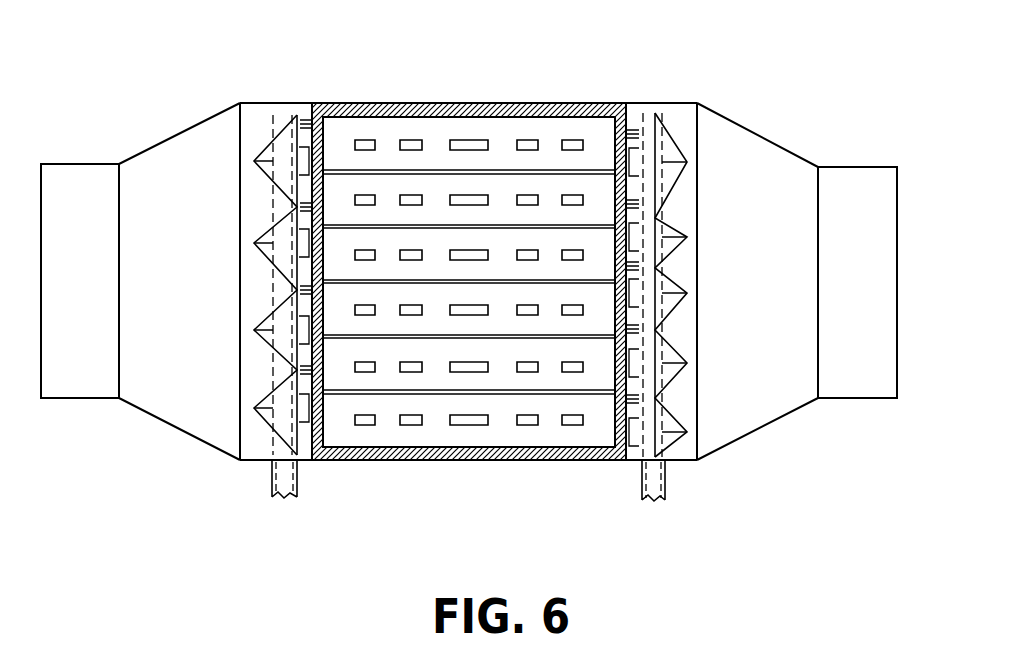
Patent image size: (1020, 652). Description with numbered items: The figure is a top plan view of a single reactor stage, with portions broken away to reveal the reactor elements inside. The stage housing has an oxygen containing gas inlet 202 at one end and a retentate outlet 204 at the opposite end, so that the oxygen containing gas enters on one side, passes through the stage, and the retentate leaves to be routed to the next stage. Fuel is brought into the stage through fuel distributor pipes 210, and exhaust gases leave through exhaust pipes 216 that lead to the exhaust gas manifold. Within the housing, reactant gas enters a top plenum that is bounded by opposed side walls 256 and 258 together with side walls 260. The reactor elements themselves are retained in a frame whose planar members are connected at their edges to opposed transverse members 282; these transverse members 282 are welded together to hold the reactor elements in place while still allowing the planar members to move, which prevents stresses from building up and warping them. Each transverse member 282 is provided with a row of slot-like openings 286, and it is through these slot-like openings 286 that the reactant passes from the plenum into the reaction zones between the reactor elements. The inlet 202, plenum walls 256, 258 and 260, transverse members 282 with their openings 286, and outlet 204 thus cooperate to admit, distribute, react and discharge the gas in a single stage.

The oxygen containing gas inlet 202 is at (177, 402).
The retentate outlet 204 is at (762, 158).
The fuel distributor pipes 210 is at (270, 482).
The exhaust pipes 216 is at (653, 482).
The side wall 256 is at (290, 152).
The side wall 258 is at (640, 160).
The side walls 260 is at (473, 103).
The transverse members 282 is at (435, 180).
The slot-like openings 286 is at (470, 424).